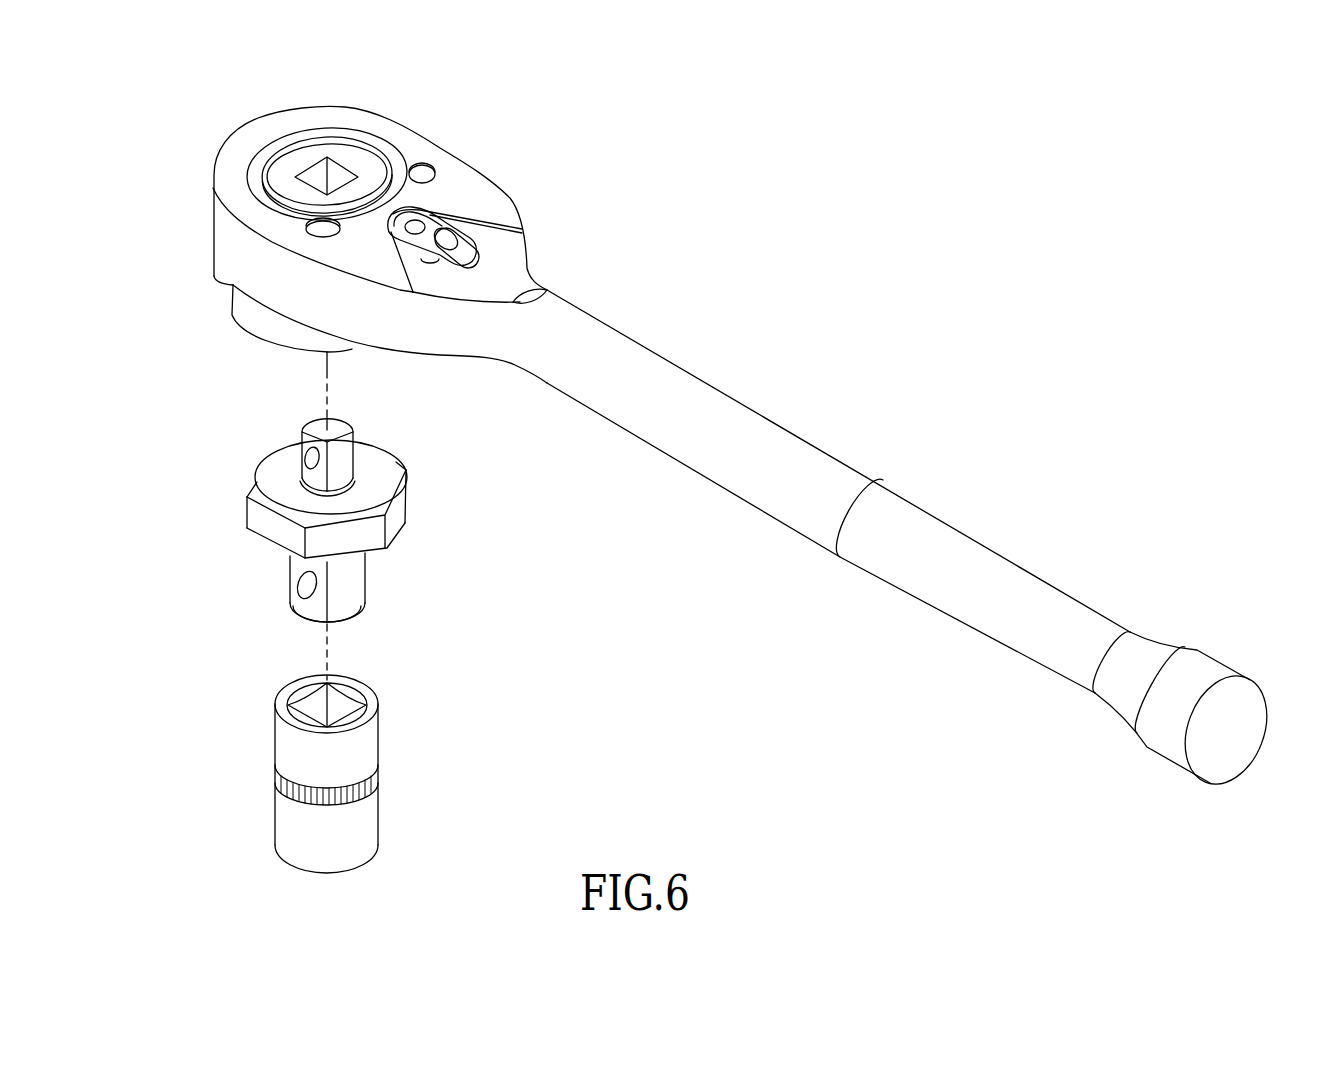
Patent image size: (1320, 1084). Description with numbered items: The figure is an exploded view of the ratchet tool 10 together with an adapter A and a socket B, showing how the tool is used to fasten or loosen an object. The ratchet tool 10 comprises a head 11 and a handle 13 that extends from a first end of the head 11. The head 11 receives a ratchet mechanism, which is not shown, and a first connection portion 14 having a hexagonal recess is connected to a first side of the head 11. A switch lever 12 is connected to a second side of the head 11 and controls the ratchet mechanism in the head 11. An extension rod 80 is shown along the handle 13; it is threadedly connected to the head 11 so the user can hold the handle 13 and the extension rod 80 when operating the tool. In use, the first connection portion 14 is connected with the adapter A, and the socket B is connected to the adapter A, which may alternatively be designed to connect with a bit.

The ratchet tool 10 is at (706, 434).
The head 11 is at (448, 175).
The switch lever 12 is at (475, 240).
The handle 13 is at (722, 408).
The first connection portion 14 is at (257, 317).
The extension rod 80 is at (980, 547).
The adapter A is at (395, 506).
The socket B is at (375, 742).